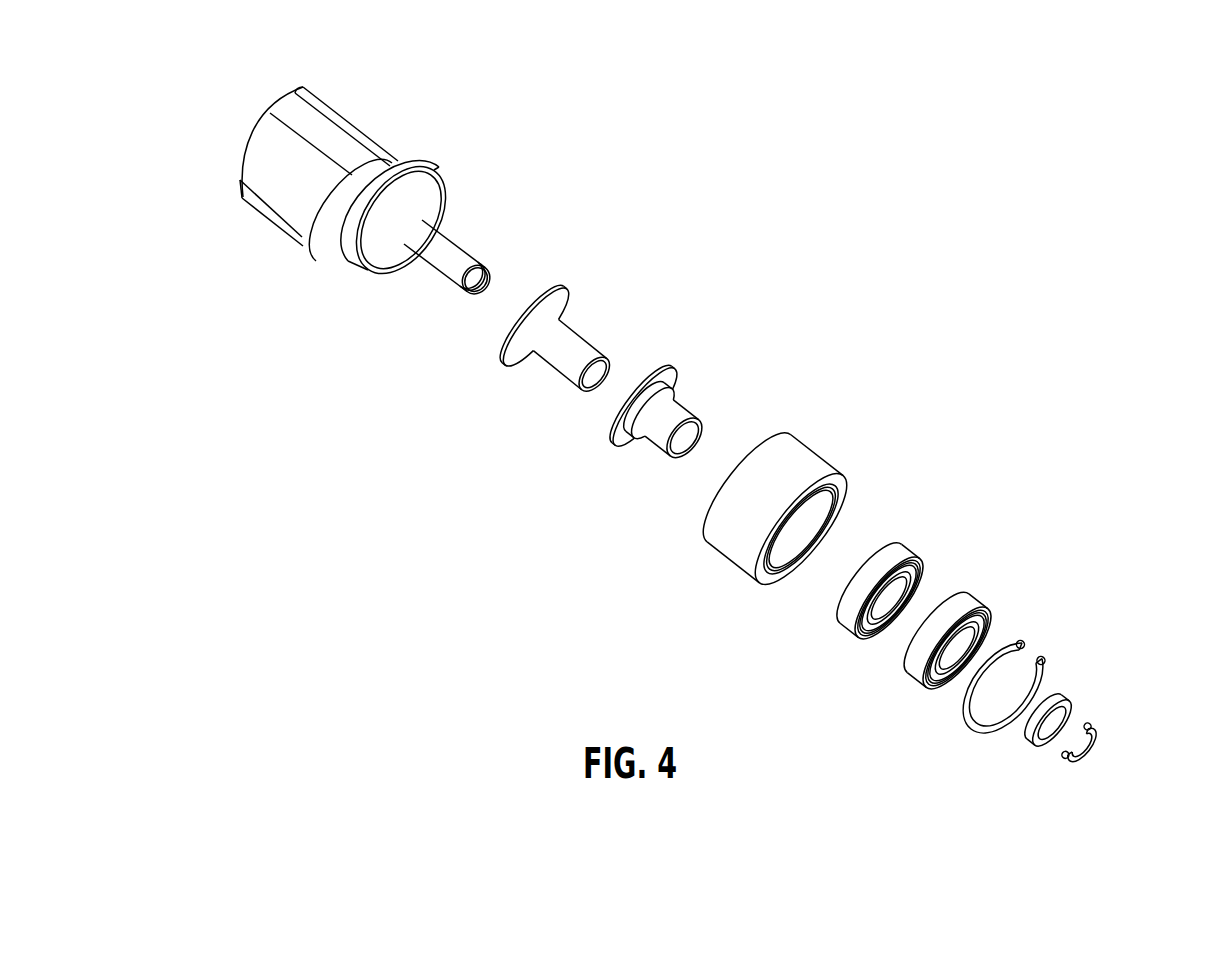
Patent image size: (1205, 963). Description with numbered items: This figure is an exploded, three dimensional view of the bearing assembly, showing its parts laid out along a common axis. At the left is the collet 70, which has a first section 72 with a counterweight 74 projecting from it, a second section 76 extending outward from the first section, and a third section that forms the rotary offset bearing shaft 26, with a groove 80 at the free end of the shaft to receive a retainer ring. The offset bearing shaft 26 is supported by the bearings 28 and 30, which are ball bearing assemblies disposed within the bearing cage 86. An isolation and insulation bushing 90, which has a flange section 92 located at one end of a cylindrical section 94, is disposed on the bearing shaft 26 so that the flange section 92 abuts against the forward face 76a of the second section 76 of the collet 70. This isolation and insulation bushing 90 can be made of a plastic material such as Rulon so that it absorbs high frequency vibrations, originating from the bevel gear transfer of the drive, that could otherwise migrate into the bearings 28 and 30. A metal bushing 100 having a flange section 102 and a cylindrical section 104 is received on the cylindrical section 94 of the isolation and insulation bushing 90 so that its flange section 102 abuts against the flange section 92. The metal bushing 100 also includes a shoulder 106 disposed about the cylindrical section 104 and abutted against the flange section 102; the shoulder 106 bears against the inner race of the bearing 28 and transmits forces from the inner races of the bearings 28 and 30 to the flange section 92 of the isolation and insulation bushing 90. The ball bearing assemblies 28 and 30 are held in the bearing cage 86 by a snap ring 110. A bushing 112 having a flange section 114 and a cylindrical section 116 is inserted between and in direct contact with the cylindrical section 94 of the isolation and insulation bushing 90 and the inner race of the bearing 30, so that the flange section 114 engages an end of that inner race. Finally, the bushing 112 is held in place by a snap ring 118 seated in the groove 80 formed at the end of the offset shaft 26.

The rotary offset bearing shaft 26 is at (447, 241).
The bearing 28 is at (896, 553).
The bearing 30 is at (957, 600).
The collet 70 is at (397, 104).
The first section 72 is at (322, 97).
The counterweight 74 is at (277, 176).
The second section 76 is at (405, 188).
The forward face 76a is at (392, 260).
The groove 80 is at (456, 287).
The bearing cage 86 is at (743, 542).
The isolation and insulation bushing 90 is at (599, 310).
The flange section 92 is at (518, 357).
The cylindrical section 94 is at (562, 357).
The metal bushing 100 is at (707, 380).
The flange section 102 is at (677, 379).
The cylindrical section 104 is at (654, 450).
The shoulder 106 is at (641, 447).
The snap ring 110 is at (977, 727).
The bushing 112 is at (1038, 747).
The flange section 114 is at (1068, 702).
The cylindrical section 116 is at (1052, 692).
The snap ring 118 is at (1100, 733).